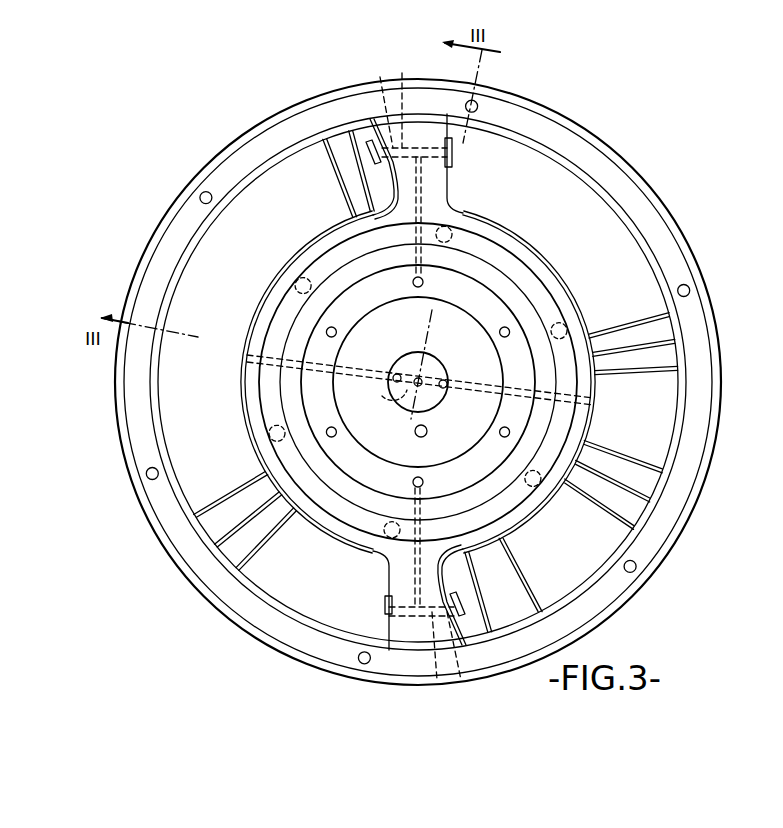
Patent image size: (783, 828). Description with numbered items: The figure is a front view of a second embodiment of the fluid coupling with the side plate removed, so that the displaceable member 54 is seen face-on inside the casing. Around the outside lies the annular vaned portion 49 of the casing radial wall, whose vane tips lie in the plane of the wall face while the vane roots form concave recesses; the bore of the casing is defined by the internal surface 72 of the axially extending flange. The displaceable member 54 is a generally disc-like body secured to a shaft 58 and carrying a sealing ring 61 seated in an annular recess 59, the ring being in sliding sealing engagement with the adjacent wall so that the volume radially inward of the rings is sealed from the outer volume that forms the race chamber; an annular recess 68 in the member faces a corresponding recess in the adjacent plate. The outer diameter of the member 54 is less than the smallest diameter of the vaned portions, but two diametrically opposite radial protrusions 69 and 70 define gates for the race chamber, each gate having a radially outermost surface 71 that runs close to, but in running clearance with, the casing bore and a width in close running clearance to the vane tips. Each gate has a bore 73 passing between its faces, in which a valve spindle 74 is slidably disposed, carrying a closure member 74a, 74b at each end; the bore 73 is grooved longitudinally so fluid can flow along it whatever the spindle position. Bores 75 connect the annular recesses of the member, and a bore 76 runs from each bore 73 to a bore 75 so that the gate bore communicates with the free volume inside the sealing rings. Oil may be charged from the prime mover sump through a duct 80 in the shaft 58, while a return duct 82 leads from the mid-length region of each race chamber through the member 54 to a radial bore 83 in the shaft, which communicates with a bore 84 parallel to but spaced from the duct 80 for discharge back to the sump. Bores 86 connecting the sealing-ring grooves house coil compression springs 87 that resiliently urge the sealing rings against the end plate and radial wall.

The annular vaned portion 49 is at (252, 565).
The displaceable member 54 is at (509, 253).
The shaft 58 is at (437, 361).
The annular recess 59 is at (552, 296).
The sealing ring 61 is at (560, 428).
The annular recess 68 is at (586, 396).
The radial protrusion 69 is at (375, 128).
The radial protrusion 70 is at (477, 648).
The radially outermost surface 71 is at (427, 113).
The internal surface 72 is at (248, 172).
The bore 73 is at (420, 384).
The valve spindle 74 is at (378, 98).
The closure member 74a is at (366, 152).
The closure member 74b is at (452, 152).
The bore 75 is at (424, 274).
The bore 76 is at (425, 178).
The duct 80 is at (412, 433).
The duct 82 is at (392, 378).
The radial bore 83 is at (393, 384).
The bore 84 is at (403, 398).
The bore 86 is at (296, 279).
The coil compression spring 87 is at (290, 292).